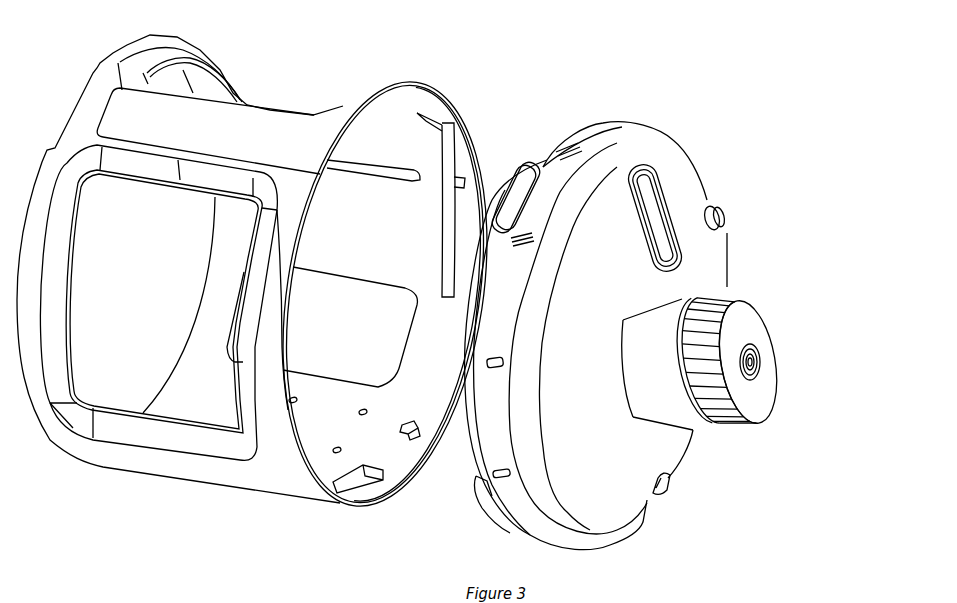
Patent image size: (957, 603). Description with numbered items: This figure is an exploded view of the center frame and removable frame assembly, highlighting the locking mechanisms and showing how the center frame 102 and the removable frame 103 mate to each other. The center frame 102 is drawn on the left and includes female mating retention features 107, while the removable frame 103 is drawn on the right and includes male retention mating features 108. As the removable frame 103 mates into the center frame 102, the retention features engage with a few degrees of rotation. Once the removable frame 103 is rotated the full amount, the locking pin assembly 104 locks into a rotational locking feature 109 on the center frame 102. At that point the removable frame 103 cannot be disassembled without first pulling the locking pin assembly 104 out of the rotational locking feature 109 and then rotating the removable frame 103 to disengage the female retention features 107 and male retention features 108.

The center frame 102 is at (297, 143).
The removable frame 103 is at (574, 423).
The locking pin assembly 104 is at (667, 481).
The female mating retention features 107 is at (453, 157).
The male retention mating features 108 is at (515, 206).
The rotational locking feature 109 is at (420, 425).